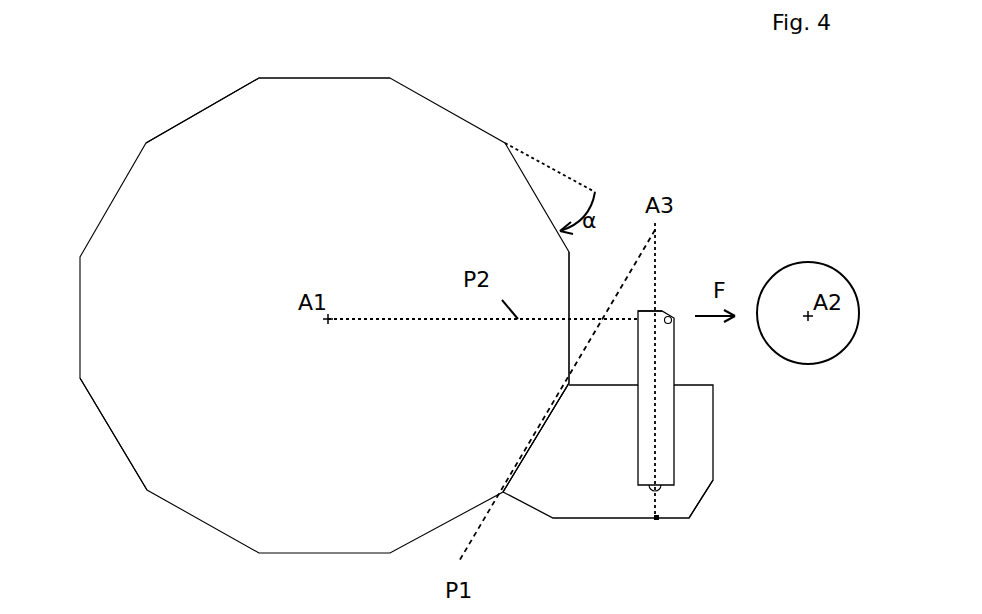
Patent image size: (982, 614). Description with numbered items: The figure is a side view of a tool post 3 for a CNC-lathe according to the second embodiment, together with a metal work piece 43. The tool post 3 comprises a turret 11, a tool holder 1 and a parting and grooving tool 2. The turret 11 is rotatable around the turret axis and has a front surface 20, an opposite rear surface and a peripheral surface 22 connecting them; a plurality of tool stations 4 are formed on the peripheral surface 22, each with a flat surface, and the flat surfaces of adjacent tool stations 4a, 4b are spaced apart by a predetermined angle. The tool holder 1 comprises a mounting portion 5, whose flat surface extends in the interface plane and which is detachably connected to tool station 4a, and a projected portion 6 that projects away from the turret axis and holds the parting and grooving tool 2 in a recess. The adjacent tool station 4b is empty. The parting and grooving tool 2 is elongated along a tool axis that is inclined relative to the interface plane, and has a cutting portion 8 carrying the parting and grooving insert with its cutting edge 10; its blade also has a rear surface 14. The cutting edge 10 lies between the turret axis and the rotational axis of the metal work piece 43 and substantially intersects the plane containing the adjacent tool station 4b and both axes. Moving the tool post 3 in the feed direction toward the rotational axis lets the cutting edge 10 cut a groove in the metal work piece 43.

The tool holder 1 is at (625, 507).
The parting and grooving tool 2 is at (670, 365).
The tool post 3 is at (608, 125).
The tool station 4 is at (448, 108).
The tool station 4a is at (535, 437).
The adjacent tool station 4b is at (553, 317).
The mounting portion 5 is at (535, 438).
The projected portion 6 is at (688, 477).
The cutting portion 8 is at (643, 323).
The cutting edge 10 is at (673, 317).
The turret 11 is at (243, 128).
The rear surface 14 is at (668, 488).
The front surface 20 is at (172, 412).
The peripheral surface 22 is at (317, 78).
The metal work piece 43 is at (815, 280).